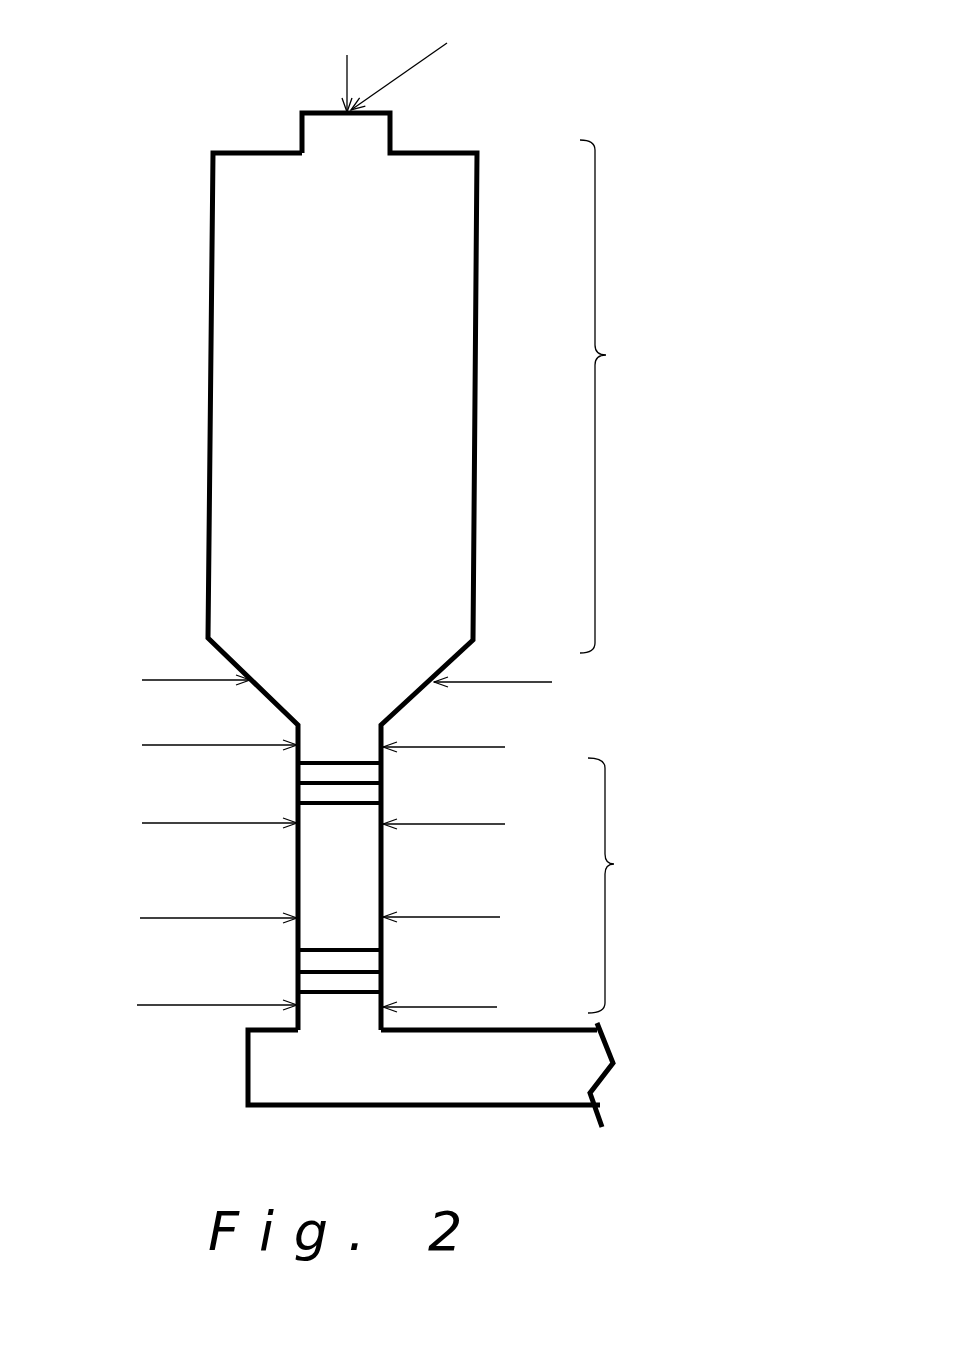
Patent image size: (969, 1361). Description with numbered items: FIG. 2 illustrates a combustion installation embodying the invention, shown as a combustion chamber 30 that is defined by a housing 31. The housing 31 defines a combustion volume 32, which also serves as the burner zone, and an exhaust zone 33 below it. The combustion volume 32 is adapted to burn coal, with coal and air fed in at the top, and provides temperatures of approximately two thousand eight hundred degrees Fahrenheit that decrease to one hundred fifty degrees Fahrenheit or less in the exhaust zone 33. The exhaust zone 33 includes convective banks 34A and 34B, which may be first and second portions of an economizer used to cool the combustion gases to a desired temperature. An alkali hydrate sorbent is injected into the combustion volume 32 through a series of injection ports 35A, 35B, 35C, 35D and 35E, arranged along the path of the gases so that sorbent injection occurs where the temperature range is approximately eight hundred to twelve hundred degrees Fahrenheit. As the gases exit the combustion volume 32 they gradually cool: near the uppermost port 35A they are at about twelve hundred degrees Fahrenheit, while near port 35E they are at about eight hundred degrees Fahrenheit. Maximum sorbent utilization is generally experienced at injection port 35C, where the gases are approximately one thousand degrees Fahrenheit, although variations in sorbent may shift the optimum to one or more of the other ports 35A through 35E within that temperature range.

The combustion chamber 30 is at (757, 280).
The housing 31 is at (478, 420).
The combustion volume 32 is at (372, 462).
The exhaust zone 33 is at (372, 890).
The convective bank 34A is at (381, 782).
The convective bank 34B is at (381, 963).
The injection port 35A is at (292, 677).
The injection port 35B is at (269, 742).
The injection port 35C is at (266, 822).
The injection port 35D is at (262, 917).
The injection port 35E is at (261, 1007).